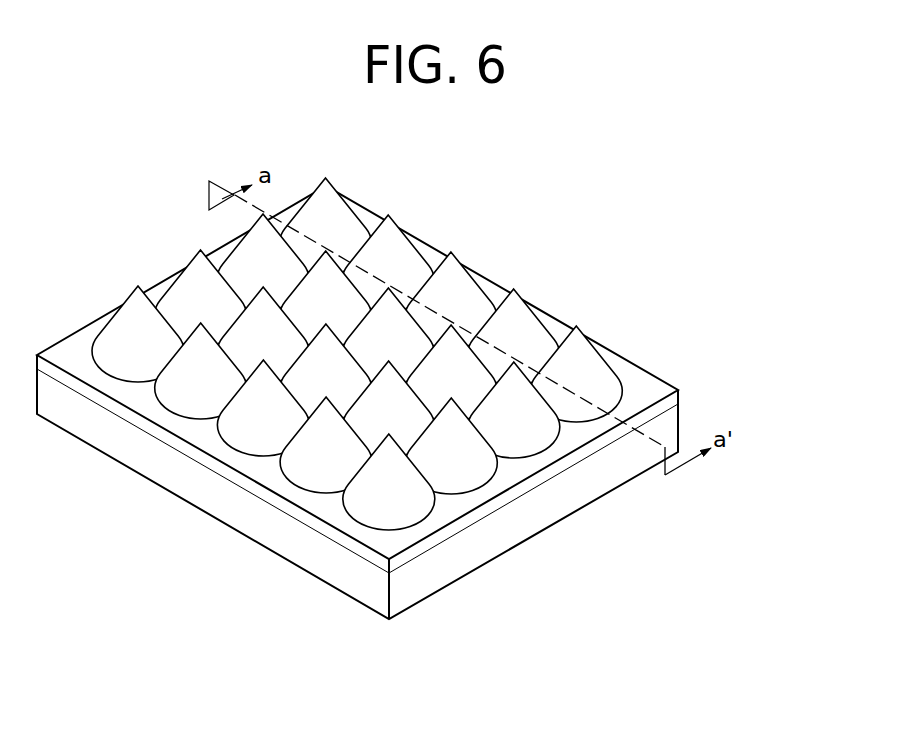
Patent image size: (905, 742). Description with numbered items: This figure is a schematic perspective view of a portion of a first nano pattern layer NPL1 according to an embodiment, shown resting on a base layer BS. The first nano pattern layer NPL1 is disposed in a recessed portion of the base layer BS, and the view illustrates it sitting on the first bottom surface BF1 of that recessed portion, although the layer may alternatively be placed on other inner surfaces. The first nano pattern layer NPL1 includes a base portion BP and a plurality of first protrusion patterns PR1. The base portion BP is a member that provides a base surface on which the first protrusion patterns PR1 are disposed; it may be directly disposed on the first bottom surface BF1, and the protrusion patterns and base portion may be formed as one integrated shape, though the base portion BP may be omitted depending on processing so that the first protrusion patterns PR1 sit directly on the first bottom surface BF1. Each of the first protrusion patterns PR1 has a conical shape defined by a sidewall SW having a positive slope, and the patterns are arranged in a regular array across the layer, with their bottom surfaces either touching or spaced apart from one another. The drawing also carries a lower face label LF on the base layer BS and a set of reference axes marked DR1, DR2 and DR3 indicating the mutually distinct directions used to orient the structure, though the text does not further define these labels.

The first nano pattern layer NPL1 is at (442, 375).
The first protrusion patterns PR1 is at (432, 354).
The sidewall SW is at (597, 380).
The base portion BP is at (673, 402).
The first bottom surface BF1 is at (442, 421).
The lower film LF is at (357, 425).
The base layer BS is at (442, 570).
The first direction DR1 is at (47, 650).
The second direction DR2 is at (47, 650).
The third direction DR3 is at (47, 650).